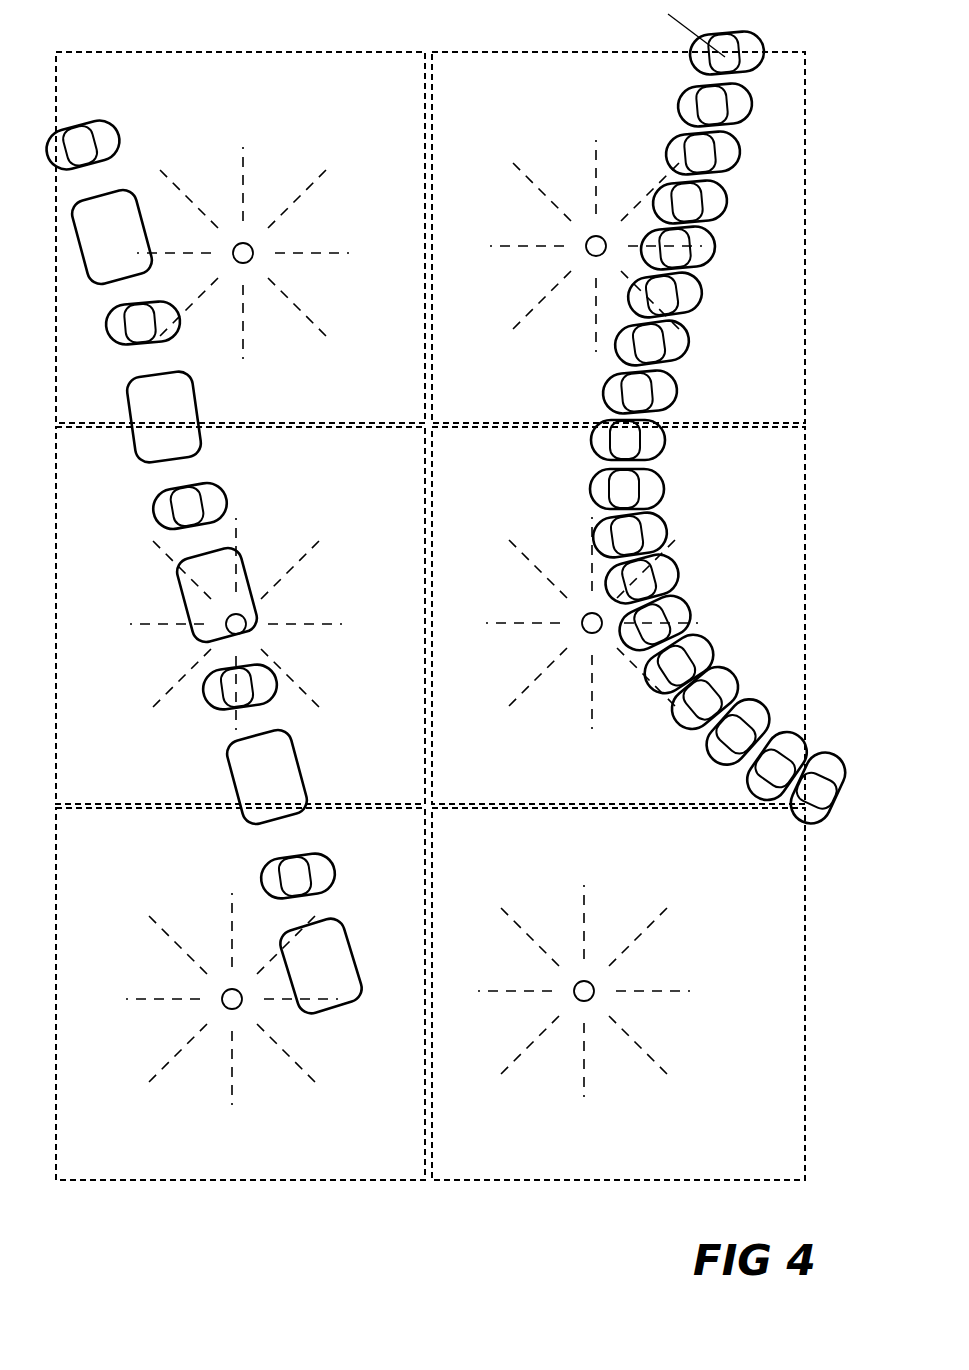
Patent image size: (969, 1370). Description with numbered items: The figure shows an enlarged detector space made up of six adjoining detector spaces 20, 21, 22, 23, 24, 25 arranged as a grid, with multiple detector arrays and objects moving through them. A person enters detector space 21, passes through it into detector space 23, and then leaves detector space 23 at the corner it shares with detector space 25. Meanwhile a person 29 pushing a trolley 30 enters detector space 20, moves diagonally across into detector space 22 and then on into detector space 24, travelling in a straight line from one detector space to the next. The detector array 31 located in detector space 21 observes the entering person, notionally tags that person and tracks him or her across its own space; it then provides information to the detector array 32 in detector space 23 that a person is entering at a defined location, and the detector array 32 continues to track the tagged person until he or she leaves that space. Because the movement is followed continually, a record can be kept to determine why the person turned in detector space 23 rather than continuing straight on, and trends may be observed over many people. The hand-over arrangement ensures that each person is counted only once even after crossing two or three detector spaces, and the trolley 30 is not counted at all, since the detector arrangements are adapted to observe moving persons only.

The detector space 20 is at (398, 89).
The detector space 21 is at (472, 89).
The detector space 22 is at (399, 464).
The detector space 23 is at (472, 465).
The detector space 24 is at (402, 841).
The detector space 25 is at (474, 841).
The person 29 is at (87, 145).
The trolley 30 is at (113, 238).
The detector array 31 is at (585, 247).
The detector array 32 is at (581, 618).